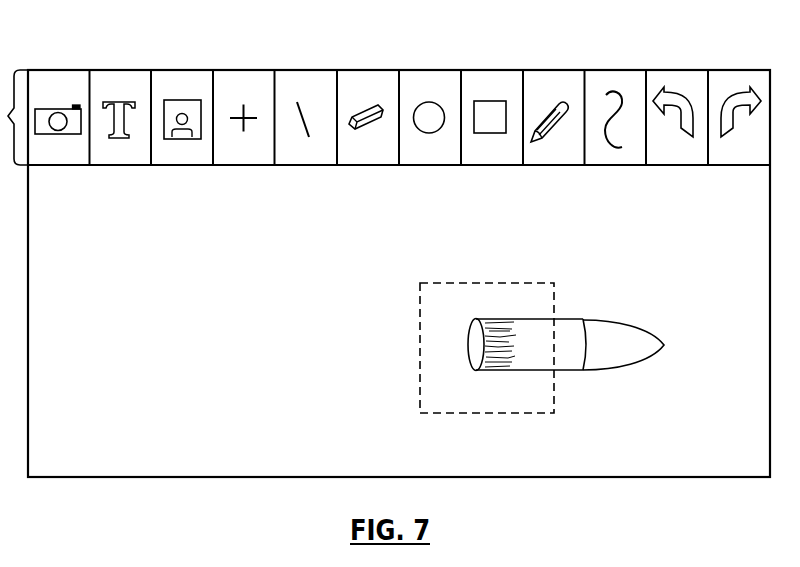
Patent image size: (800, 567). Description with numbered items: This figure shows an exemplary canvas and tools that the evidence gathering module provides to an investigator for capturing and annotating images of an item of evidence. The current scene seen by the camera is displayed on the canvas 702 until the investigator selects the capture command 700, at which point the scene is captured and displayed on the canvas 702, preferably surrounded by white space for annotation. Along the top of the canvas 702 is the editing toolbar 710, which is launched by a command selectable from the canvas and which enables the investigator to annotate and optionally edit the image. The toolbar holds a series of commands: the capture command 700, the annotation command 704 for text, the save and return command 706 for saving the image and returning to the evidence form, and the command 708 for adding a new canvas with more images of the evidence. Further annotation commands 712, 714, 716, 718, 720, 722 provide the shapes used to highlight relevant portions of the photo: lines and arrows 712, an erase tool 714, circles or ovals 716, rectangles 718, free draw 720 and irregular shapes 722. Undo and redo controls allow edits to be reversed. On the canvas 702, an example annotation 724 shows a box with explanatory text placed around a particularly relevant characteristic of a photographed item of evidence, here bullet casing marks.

The capture command 700 is at (59, 158).
The canvas 702 is at (247, 338).
The annotation command 704 is at (121, 158).
The save and return command 706 is at (183, 158).
The new canvas command 708 is at (245, 158).
The editing toolbar 710 is at (9, 115).
The annotation command 712 is at (307, 158).
The annotation command 714 is at (369, 158).
The annotation command 716 is at (431, 158).
The annotation command 718 is at (493, 158).
The annotation command 720 is at (552, 158).
The annotation command 722 is at (615, 158).
The box with explanatory text 724 is at (542, 400).